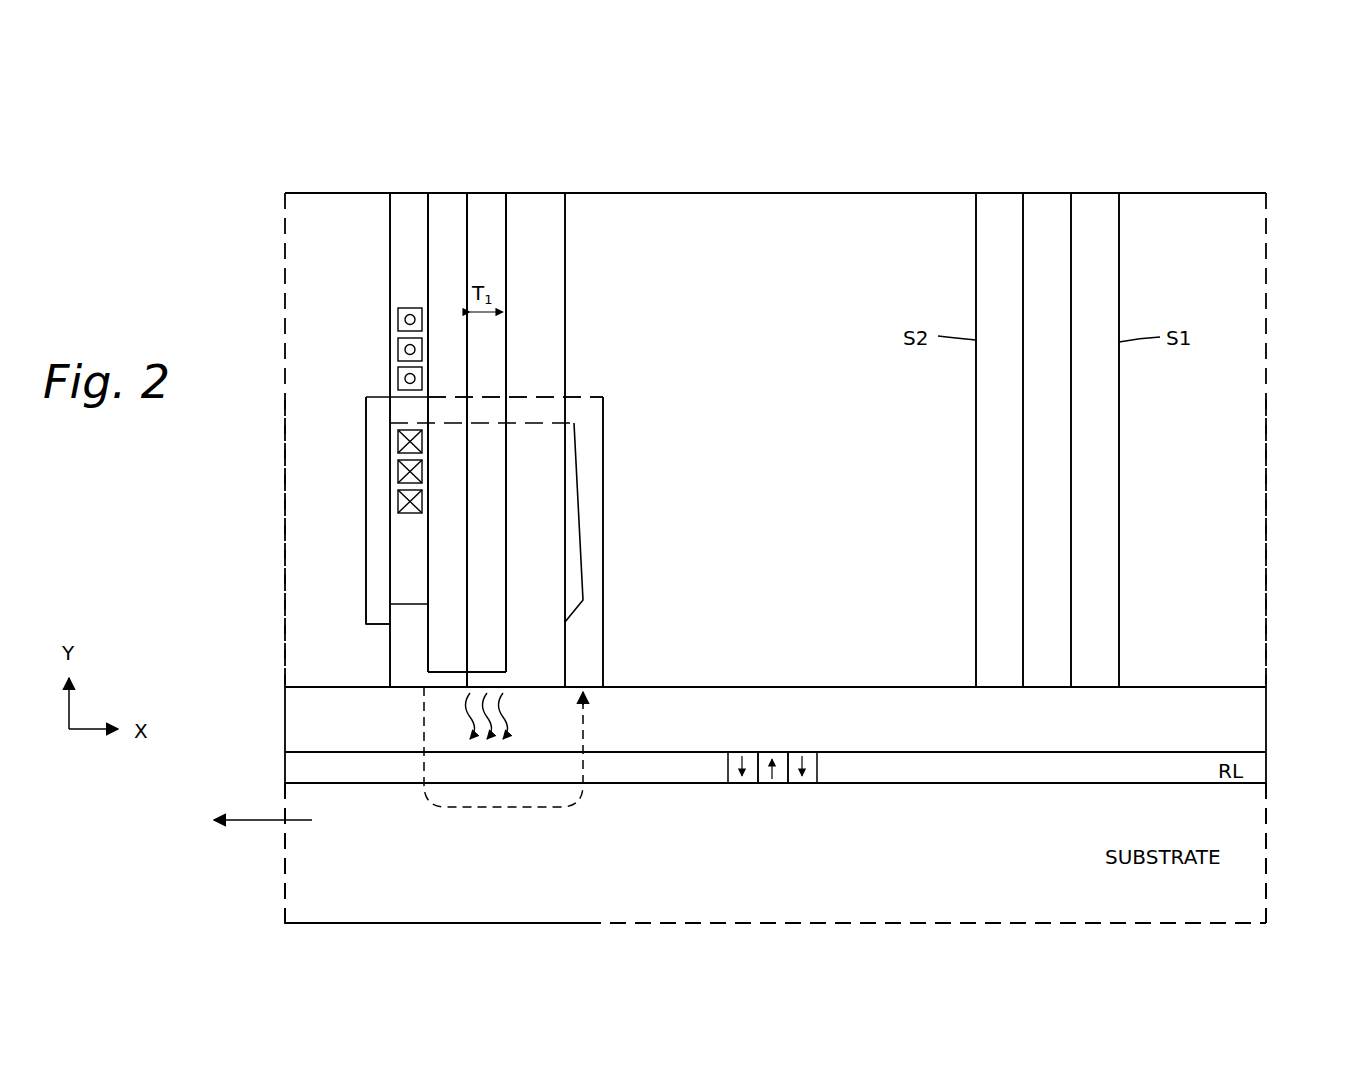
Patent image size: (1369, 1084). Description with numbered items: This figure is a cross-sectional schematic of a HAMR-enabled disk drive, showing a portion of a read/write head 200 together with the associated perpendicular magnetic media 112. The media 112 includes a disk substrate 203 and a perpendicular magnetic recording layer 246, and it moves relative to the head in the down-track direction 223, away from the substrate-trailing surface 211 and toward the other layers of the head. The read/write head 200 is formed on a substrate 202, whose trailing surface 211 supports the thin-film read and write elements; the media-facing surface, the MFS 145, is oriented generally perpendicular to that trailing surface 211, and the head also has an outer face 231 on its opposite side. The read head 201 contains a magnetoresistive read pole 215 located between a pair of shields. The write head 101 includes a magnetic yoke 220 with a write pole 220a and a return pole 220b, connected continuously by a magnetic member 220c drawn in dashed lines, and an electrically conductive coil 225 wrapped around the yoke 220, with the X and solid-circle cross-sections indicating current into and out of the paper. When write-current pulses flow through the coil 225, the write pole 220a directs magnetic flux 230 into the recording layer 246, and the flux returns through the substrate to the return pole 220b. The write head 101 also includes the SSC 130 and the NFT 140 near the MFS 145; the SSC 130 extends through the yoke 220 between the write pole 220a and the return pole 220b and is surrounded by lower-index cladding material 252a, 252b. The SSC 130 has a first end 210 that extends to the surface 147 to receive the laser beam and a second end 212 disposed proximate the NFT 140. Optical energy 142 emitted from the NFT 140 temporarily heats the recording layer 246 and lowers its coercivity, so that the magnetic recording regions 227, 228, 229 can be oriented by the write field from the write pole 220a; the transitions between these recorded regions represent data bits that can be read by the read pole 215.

The read/write head 200 is at (266, 203).
The write head 101 is at (388, 130).
The cladding material 252a is at (437, 203).
The SSC 130 is at (480, 203).
The first end 210 is at (497, 197).
The cladding material 252b is at (555, 203).
The surface 147 is at (730, 191).
The read head 201 is at (1125, 130).
The substrate-trailing surface 211 is at (1113, 226).
The magnetoresistive read pole 215 is at (1047, 640).
The magnetic yoke 220 is at (366, 415).
The write pole 220a is at (390, 672).
The return pole 220b is at (603, 658).
The magnetic member 220c is at (603, 397).
The electrically conductive coil 225 is at (381, 310).
The second end 212 is at (490, 672).
The NFT 140 is at (487, 680).
The optical energy 142 is at (458, 718).
The MFS 145 is at (1218, 694).
The perpendicular magnetic recording layer 246 is at (296, 770).
The magnetic flux 230 is at (495, 807).
The magnetic recording region 228 is at (735, 790).
The magnetic recording region 227 is at (765, 788).
The magnetic recording region 229 is at (808, 788).
The outer face 231 is at (290, 590).
The substrate 202 is at (1253, 592).
The disk substrate 203 is at (1258, 897).
The perpendicular magnetic media 112 is at (286, 897).
The direction 223 is at (250, 821).